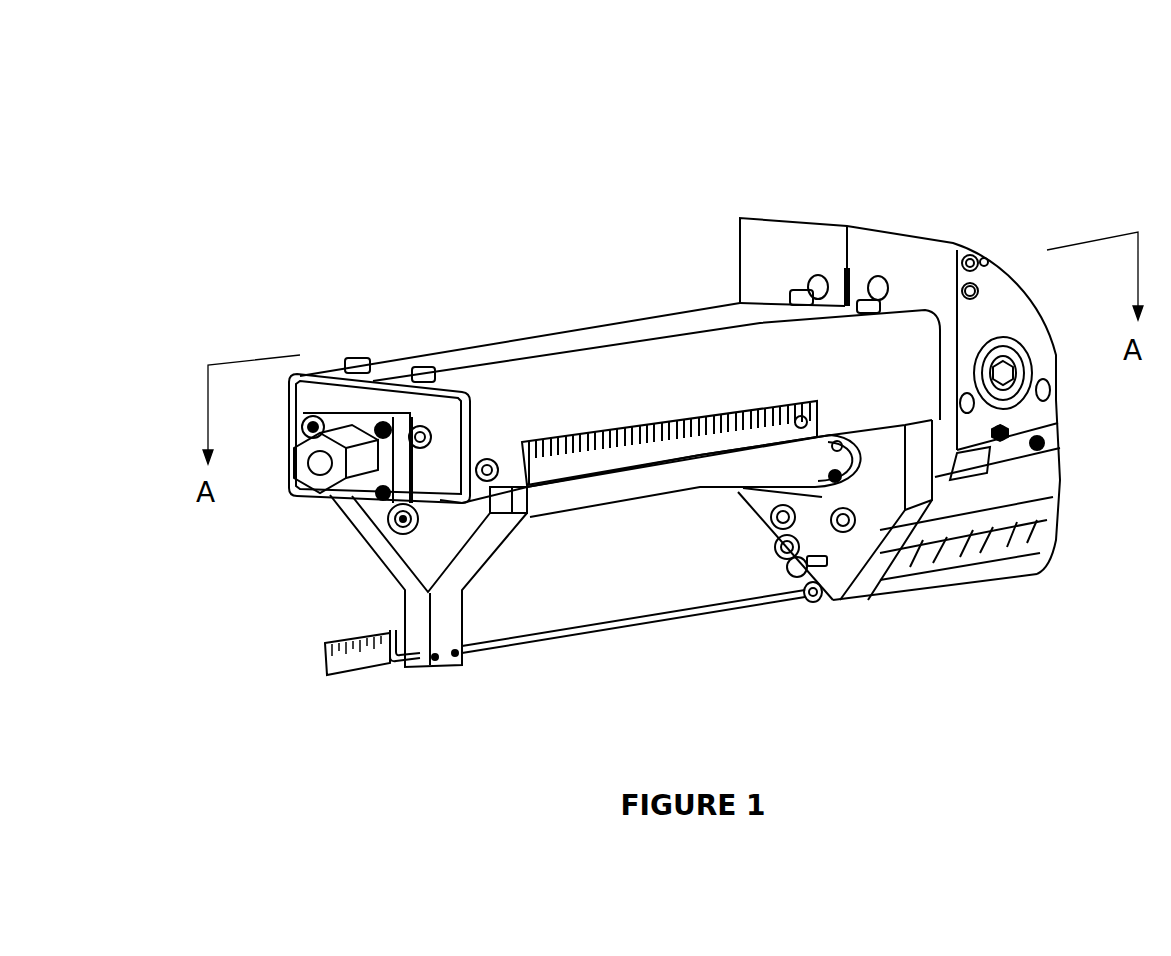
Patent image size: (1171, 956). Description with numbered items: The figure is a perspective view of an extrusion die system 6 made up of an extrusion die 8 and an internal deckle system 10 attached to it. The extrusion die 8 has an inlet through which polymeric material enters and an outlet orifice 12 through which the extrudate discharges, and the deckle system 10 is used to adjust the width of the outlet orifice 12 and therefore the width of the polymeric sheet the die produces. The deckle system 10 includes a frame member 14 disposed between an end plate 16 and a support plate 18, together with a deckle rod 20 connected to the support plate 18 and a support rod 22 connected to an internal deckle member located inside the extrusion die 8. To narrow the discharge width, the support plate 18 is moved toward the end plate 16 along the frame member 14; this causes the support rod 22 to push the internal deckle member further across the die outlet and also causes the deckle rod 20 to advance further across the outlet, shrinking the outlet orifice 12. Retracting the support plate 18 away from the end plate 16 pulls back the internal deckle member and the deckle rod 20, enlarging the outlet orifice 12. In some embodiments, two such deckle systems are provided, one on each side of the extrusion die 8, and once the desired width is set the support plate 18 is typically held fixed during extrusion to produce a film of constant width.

The extrusion die system 6 is at (481, 112).
The extrusion die 8 is at (777, 199).
The internal deckle system 10 is at (570, 301).
The outlet orifice 12 is at (975, 592).
The frame member 14 is at (443, 363).
The end plate 16 is at (877, 565).
The support plate 18 is at (378, 526).
The deckle rod 20 is at (738, 615).
The support rod 22 is at (637, 490).